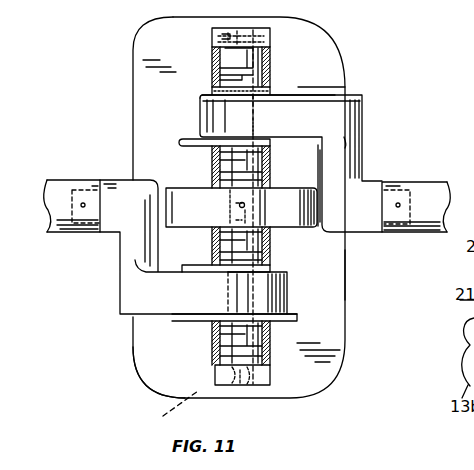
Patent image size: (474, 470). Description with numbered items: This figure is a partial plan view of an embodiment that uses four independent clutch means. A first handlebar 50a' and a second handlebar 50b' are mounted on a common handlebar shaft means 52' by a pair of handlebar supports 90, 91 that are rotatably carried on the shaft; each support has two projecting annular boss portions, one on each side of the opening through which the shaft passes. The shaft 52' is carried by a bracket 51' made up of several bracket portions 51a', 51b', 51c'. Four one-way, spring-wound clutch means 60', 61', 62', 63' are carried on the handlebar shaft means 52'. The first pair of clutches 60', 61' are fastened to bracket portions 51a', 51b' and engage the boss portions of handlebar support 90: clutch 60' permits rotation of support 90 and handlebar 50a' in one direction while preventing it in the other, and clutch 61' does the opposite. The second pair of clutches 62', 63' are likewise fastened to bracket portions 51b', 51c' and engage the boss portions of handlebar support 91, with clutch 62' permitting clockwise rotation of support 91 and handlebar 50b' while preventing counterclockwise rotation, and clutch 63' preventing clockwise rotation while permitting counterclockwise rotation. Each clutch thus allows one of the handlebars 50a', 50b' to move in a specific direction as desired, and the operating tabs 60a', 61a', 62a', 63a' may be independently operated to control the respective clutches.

The bracket 51' is at (255, 207).
The bracket portion 51a' is at (174, 37).
The bracket portion 51b' is at (368, 276).
The bracket portion 51c' is at (289, 388).
The handlebar shaft means 52' is at (165, 408).
The one-way clutch means 60' is at (299, 79).
The operating tab 60a' is at (371, 87).
The handlebar support 90 is at (334, 118).
The handlebar support 91 is at (117, 194).
The one-way clutch means 61' is at (148, 157).
The operating tab 61a' is at (174, 124).
The one-way clutch means 62' is at (245, 251).
The operating tab 62a' is at (161, 290).
The one-way clutch means 63' is at (144, 378).
The operating tab 63a' is at (278, 339).
The first handlebar 50a' is at (416, 228).
The second handlebar 50b' is at (71, 228).